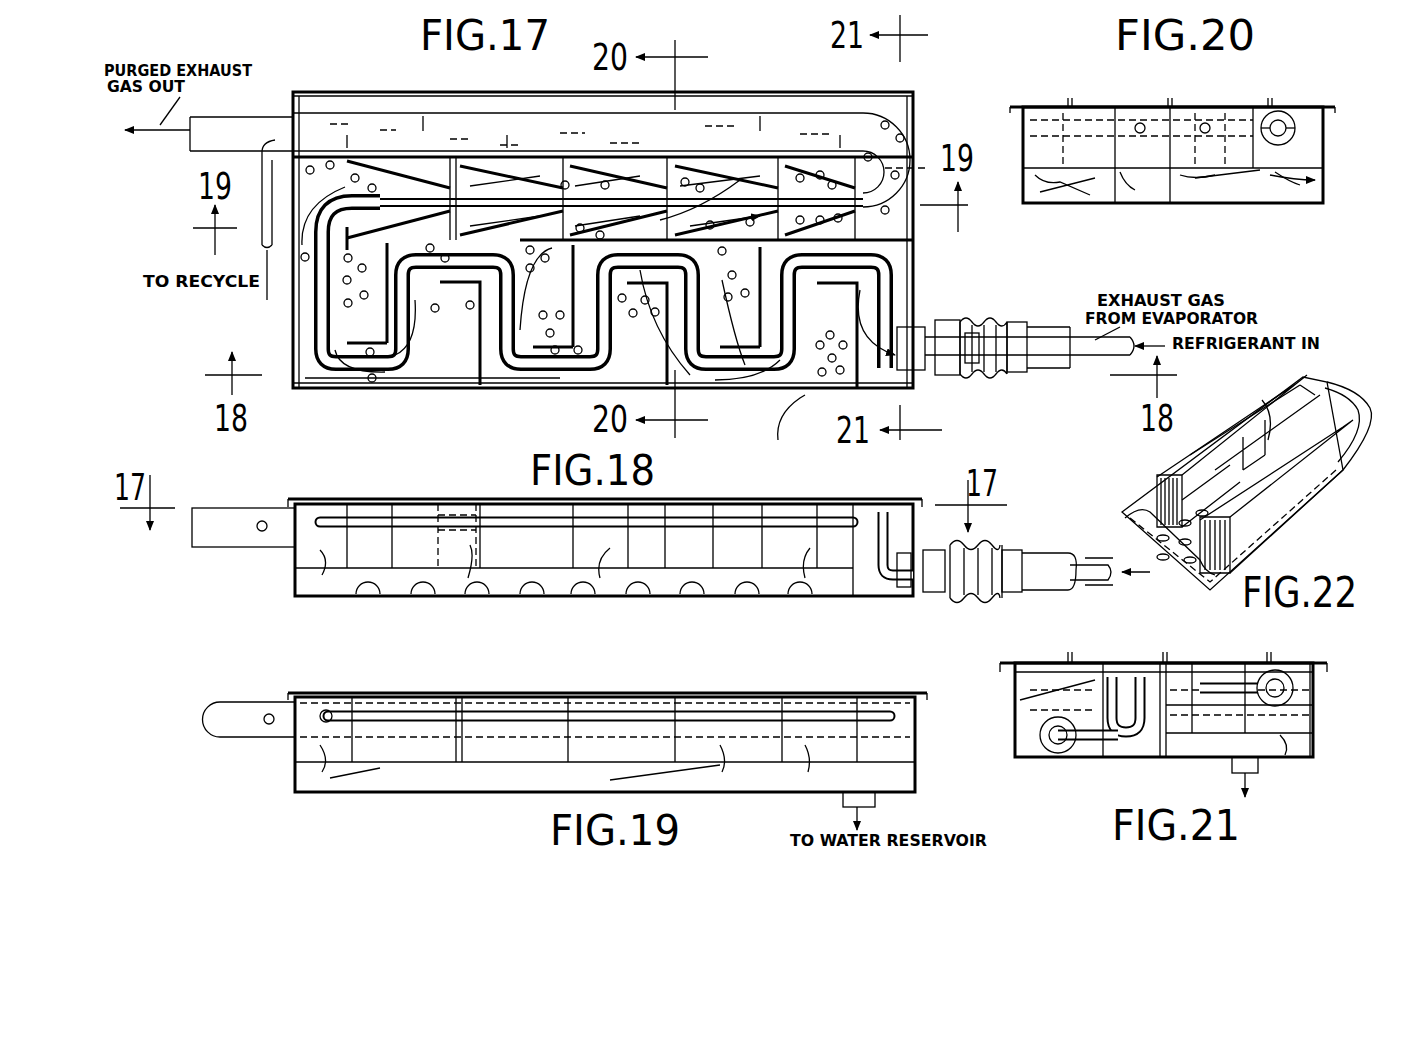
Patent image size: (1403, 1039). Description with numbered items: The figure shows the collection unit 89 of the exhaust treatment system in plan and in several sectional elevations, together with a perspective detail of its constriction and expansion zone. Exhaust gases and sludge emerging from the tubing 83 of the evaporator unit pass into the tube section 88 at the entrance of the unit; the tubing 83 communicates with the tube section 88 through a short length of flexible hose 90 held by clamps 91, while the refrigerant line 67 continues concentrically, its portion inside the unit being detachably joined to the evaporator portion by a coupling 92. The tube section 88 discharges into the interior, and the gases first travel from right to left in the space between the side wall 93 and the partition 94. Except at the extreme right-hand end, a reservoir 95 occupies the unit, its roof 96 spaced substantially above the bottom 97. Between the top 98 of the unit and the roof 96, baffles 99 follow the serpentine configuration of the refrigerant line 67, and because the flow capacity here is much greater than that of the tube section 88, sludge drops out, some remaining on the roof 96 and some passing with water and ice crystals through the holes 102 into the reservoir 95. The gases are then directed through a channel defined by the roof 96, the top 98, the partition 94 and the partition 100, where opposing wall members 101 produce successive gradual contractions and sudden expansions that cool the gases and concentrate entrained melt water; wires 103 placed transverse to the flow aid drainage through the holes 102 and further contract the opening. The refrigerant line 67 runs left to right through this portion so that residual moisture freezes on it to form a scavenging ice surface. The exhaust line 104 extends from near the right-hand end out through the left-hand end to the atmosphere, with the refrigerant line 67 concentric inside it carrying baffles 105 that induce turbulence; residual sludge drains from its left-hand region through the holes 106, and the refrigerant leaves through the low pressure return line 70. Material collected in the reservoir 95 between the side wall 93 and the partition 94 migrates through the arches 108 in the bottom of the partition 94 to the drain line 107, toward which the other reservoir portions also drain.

In FIG. 17, the refrigerant line 67 is at (316, 312).
In FIG. 18, the refrigerant line 67 is at (370, 518).
In FIG. 19, the refrigerant line 67 is at (620, 712).
In FIG. 20, the refrigerant line 67 is at (1030, 133).
In FIG. 21, the refrigerant line 67 is at (1128, 670).
In FIG. 17, the low pressure return line 70 is at (260, 238).
In FIG. 17, the tubing 83 is at (1045, 370).
In FIG. 17, the tube section 88 is at (922, 372).
In FIG. 18, the tube section 88 is at (910, 590).
In FIG. 21, the tube section 88 is at (1040, 750).
In FIG. 17, the collection unit 89 is at (792, 423).
In FIG. 17, the flexible tubing or hose 90 is at (983, 322).
In FIG. 18, the flexible tubing or hose 90 is at (960, 595).
In FIG. 17, the clamps 91 is at (960, 295).
In FIG. 18, the clamps 91 is at (1012, 550).
In FIG. 17, the coupling 92 is at (972, 372).
In FIG. 17, the side wall 93 is at (478, 386).
In FIG. 21, the side wall 93 is at (1015, 712).
In FIG. 18, the partition 94 is at (335, 585).
In FIG. 20, the partition 94 is at (1165, 195).
In FIG. 21, the partition 94 is at (1172, 665).
In FIG. 22, the partition 94 is at (1320, 460).
In FIG. 19, the reservoir 95 is at (525, 790).
In FIG. 20, the reservoir 95 is at (1205, 185).
In FIG. 21, the reservoir 95 is at (1290, 757).
In FIG. 18, the roof 96 is at (515, 590).
In FIG. 19, the roof 96 is at (727, 765).
In FIG. 20, the roof 96 is at (1318, 185).
In FIG. 21, the roof 96 is at (1180, 757).
In FIG. 22, the roof 96 is at (1300, 500).
In FIG. 18, the bottom 97 is at (783, 575).
In FIG. 19, the bottom 97 is at (825, 795).
In FIG. 20, the bottom 97 is at (1125, 205).
In FIG. 21, the bottom 97 is at (1115, 757).
In FIG. 18, the top 98 is at (790, 499).
In FIG. 19, the top 98 is at (770, 670).
In FIG. 20, the top 98 is at (1055, 85).
In FIG. 21, the top 98 is at (1045, 663).
In FIG. 17, the baffles 99 is at (390, 312).
In FIG. 18, the baffles 99 is at (470, 515).
In FIG. 20, the baffles 99 is at (1130, 112).
In FIG. 21, the baffles 99 is at (1118, 670).
In FIG. 17, the partition 100 is at (530, 135).
In FIG. 20, the partition 100 is at (1242, 118).
In FIG. 21, the partition 100 is at (1300, 718).
In FIG. 22, the partition 100 is at (1157, 490).
In FIG. 19, the opposing wall members 101 is at (480, 725).
In FIG. 22, the opposing wall members 101 is at (1200, 448).
In FIG. 17, the holes 102 is at (710, 180).
In FIG. 20, the holes 102 is at (1030, 182).
In FIG. 22, the holes 102 is at (1185, 560).
In FIG. 19, the wires 103 is at (487, 745).
In FIG. 22, the wires 103 is at (1250, 420).
In FIG. 17, the exhaust line 104 is at (190, 151).
In FIG. 18, the exhaust line 104 is at (240, 485).
In FIG. 19, the exhaust line 104 is at (280, 670).
In FIG. 20, the exhaust line 104 is at (1296, 128).
In FIG. 21, the exhaust line 104 is at (1295, 688).
In FIG. 17, the baffles 105 is at (490, 80).
In FIG. 19, the holes 106 is at (525, 777).
In FIG. 17, the drain line 107 is at (921, 185).
In FIG. 19, the drain line 107 is at (876, 800).
In FIG. 21, the drain line 107 is at (1232, 768).
In FIG. 18, the arches 108 is at (692, 590).